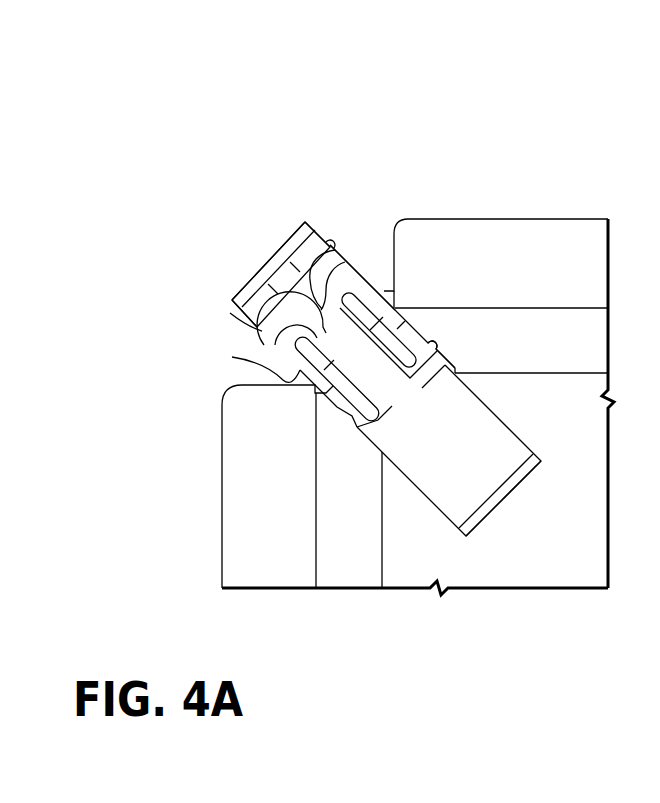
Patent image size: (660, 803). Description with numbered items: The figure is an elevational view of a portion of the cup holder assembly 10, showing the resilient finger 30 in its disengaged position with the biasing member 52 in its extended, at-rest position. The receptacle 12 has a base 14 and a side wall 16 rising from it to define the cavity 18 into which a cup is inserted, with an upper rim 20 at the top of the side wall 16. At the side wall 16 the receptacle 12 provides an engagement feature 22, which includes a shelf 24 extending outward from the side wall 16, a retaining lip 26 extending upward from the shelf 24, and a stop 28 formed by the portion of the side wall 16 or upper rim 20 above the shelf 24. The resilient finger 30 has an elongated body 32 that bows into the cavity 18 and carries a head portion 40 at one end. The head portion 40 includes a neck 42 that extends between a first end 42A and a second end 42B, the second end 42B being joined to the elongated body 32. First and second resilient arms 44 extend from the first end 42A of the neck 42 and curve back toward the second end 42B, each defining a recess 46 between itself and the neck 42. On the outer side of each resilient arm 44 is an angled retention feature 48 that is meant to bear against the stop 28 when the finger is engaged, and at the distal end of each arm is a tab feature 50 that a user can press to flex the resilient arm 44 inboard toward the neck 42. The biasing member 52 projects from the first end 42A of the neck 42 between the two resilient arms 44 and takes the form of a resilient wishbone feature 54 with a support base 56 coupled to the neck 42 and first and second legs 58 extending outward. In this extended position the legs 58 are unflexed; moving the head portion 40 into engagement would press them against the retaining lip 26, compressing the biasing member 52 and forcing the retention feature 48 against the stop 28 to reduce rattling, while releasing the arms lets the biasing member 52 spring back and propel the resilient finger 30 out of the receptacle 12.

The cup holder assembly 10 is at (420, 119).
The receptacle 12 is at (210, 555).
The base 14 is at (533, 568).
The side wall 16 is at (574, 355).
The cavity 18 is at (587, 534).
The upper rim 20 is at (566, 284).
The engagement feature 22 is at (242, 274).
The shelf 24 is at (258, 310).
The retaining lip 26 is at (245, 295).
The stop 28 is at (405, 303).
The resilient finger 30 is at (451, 517).
The elongated body 32 is at (441, 468).
The head portion 40 is at (363, 260).
The neck 42 is at (366, 384).
The first end 42A is at (282, 358).
The second end 42B is at (407, 398).
The resilient arm 44 is at (442, 350).
The recess 46 is at (428, 332).
The retention feature 48 is at (398, 328).
The tab feature 50 is at (452, 347).
The biasing member 52 is at (302, 297).
The resilient wishbone feature 54 is at (280, 297).
The support base 56 is at (350, 263).
The legs 58 is at (245, 277).